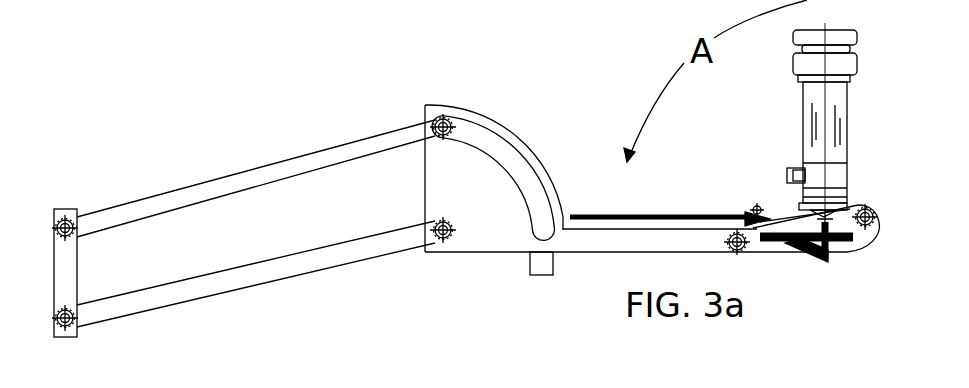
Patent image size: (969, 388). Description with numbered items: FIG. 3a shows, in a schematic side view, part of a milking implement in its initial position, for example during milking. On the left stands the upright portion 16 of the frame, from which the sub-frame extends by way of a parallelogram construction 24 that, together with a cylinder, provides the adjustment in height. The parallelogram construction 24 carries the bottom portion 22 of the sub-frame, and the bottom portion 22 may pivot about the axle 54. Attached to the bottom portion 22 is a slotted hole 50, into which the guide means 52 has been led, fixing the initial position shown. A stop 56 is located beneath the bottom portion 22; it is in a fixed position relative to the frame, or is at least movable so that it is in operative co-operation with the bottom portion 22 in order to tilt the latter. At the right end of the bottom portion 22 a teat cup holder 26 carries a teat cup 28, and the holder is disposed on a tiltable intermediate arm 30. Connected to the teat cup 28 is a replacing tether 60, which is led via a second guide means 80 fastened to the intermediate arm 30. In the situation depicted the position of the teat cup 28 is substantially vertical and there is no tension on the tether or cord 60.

The upright portion 16 is at (65, 271).
The bottom portion 22 is at (610, 243).
The parallelogram construction 24 is at (252, 178).
The teat cup holder 26 is at (800, 217).
The teat cup 28 is at (818, 126).
The intermediate arm 30 is at (847, 252).
The slotted hole 50 is at (490, 143).
The guide means 52 is at (432, 128).
The axle 54 is at (443, 239).
The stop 56 is at (542, 265).
The replacing tether 60 is at (622, 215).
The second guide means 80 is at (727, 214).